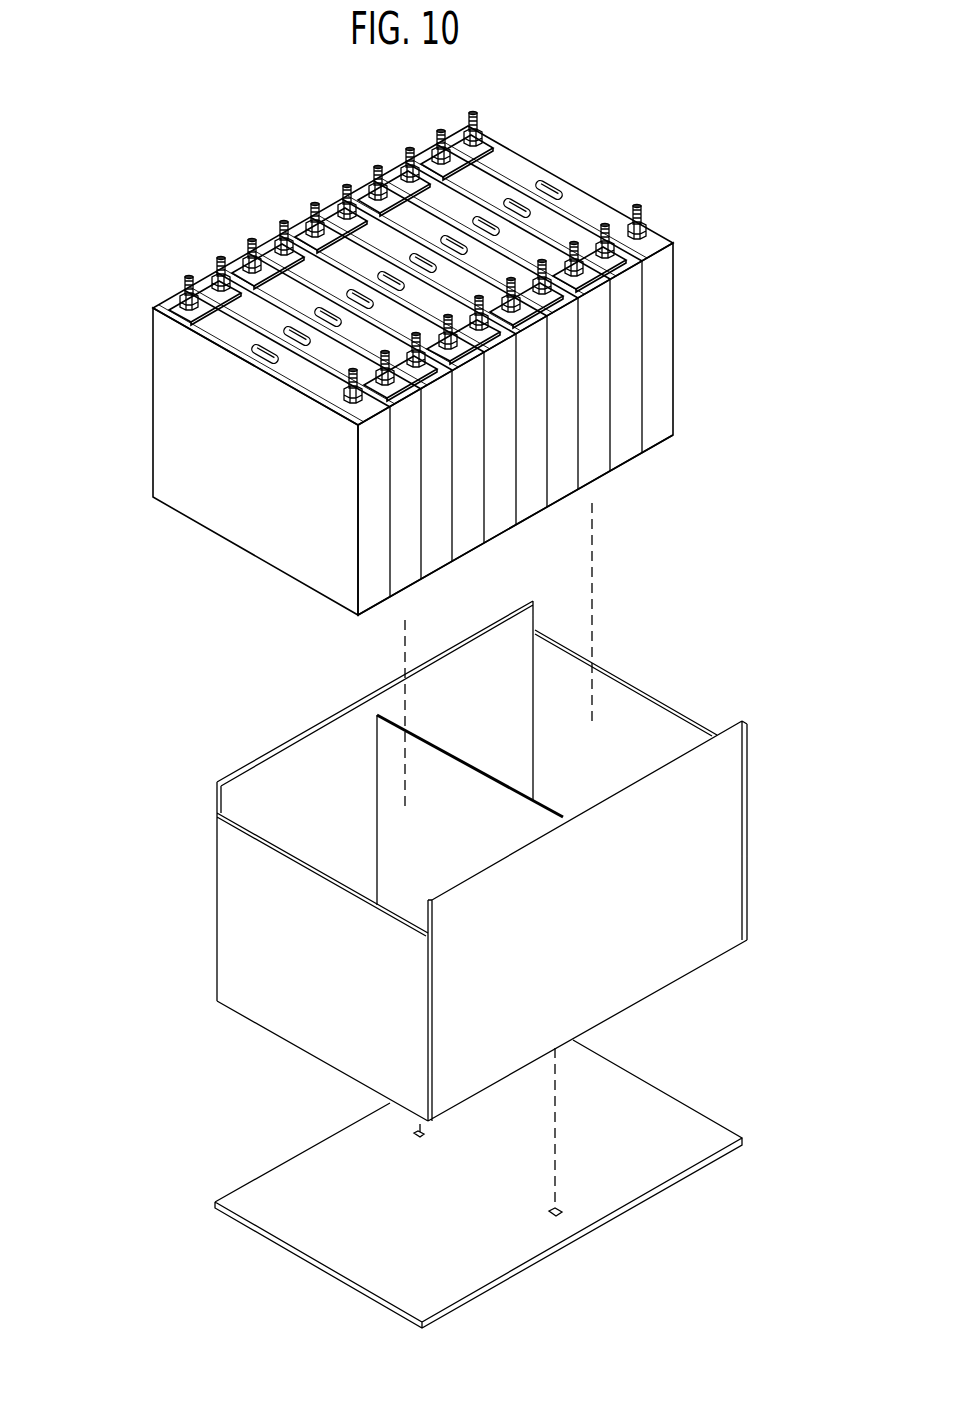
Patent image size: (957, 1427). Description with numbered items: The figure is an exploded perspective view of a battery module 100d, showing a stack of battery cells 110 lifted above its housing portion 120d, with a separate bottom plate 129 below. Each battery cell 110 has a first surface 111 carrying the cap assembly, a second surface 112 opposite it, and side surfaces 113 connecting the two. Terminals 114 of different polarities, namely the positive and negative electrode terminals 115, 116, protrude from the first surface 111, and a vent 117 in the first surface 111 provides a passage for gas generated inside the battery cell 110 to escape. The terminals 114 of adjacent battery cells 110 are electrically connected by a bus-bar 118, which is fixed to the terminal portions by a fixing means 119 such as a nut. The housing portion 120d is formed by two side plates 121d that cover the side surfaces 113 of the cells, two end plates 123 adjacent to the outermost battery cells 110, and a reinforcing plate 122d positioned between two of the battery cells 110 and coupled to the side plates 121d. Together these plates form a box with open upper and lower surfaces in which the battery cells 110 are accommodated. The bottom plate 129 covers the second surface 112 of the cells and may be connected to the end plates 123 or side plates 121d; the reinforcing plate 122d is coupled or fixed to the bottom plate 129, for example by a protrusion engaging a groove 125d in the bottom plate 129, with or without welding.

The battery module 100d is at (783, 156).
The battery cell 110 is at (250, 215).
The first surface 111 is at (364, 235).
The second surface 112 is at (653, 447).
The side surfaces 113 is at (668, 357).
The terminals 114 is at (636, 131).
The positive electrode terminal 115 is at (472, 124).
The negative electrode terminal 116 is at (640, 218).
The vent 117 is at (262, 354).
The bus-bar 118 is at (334, 228).
The fixing means 119 is at (178, 302).
The housing portion 120d is at (110, 736).
The side plates 121d is at (236, 751).
The reinforcing plate 122d is at (434, 789).
The end plates 123 is at (252, 914).
The groove 125d is at (560, 1213).
The bottom plate 129 is at (264, 1153).